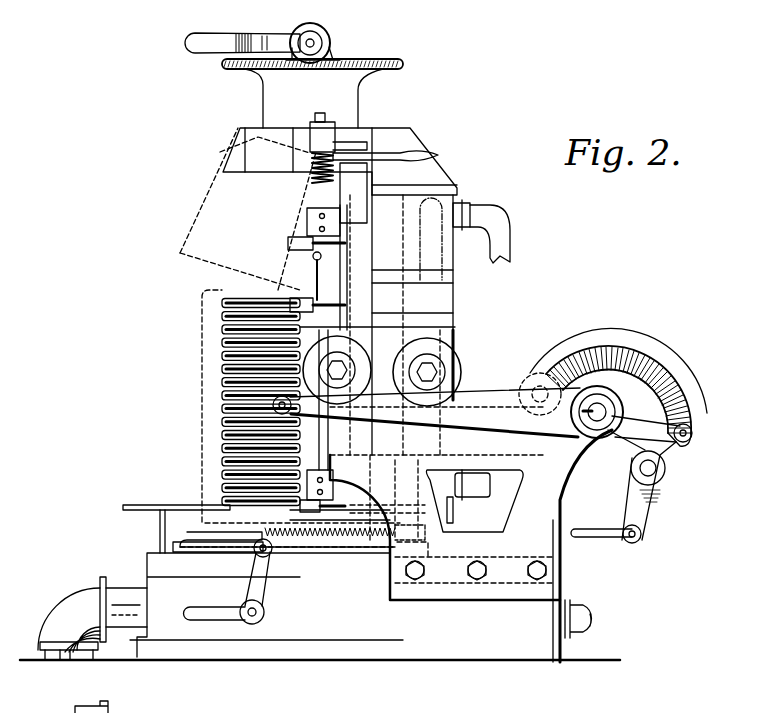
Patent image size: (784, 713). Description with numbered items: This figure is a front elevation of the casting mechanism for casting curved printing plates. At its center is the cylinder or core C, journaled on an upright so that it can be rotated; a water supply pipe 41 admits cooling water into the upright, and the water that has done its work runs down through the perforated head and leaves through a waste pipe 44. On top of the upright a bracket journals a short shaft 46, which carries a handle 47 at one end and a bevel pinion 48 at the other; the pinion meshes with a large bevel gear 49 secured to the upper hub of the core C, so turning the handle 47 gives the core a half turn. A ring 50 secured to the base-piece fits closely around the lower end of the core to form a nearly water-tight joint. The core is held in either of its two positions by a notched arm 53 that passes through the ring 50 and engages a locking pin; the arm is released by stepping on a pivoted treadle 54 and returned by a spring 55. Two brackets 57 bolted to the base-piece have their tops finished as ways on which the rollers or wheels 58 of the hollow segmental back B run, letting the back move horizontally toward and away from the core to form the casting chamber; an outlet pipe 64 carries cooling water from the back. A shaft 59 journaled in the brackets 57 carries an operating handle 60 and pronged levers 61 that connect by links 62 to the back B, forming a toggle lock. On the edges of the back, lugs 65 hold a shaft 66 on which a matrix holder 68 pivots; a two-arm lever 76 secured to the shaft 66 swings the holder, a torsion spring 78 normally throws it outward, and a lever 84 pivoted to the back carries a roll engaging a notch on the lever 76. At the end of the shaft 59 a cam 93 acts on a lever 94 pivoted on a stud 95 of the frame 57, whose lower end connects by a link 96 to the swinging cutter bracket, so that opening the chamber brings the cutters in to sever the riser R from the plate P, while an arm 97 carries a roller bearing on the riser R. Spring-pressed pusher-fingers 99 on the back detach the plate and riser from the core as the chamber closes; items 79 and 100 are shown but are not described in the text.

The water supply pipe 41 is at (560, 642).
The waste pipe 44 is at (120, 607).
The short shaft 46 is at (294, 54).
The handle 47 is at (190, 45).
The bevel pinion 48 is at (332, 37).
The bevel gear 49 is at (398, 66).
The ring 50 is at (208, 548).
The notched arm 53 is at (210, 538).
The pivoted treadle 54 is at (212, 618).
The spring 55 is at (340, 538).
The bracket 57 is at (510, 547).
The rollers or wheels 58 is at (355, 350).
The shaft 59 is at (601, 408).
The operating handle 60 is at (278, 407).
The pronged lever 61 is at (545, 380).
The link 62 is at (506, 385).
The outlet pipe 64 is at (497, 252).
The lug 65 is at (307, 225).
The shaft 66 is at (320, 112).
The matrix holder 68 is at (328, 322).
The two-arm lever 76 is at (352, 145).
The torsion spring 78 is at (312, 158).
The knob 79 is at (315, 260).
The lever 84 is at (440, 156).
The cam 93 is at (688, 365).
The lever 94 is at (673, 450).
The stud 95 is at (650, 468).
The link 96 is at (603, 538).
The arm 97 is at (68, 703).
The pusher-fingers 99 is at (288, 244).
The shelf 100 is at (133, 506).
The segmental back B is at (455, 297).
The cylinder or core C is at (222, 251).
The plate P is at (220, 294).
The riser R is at (210, 186).